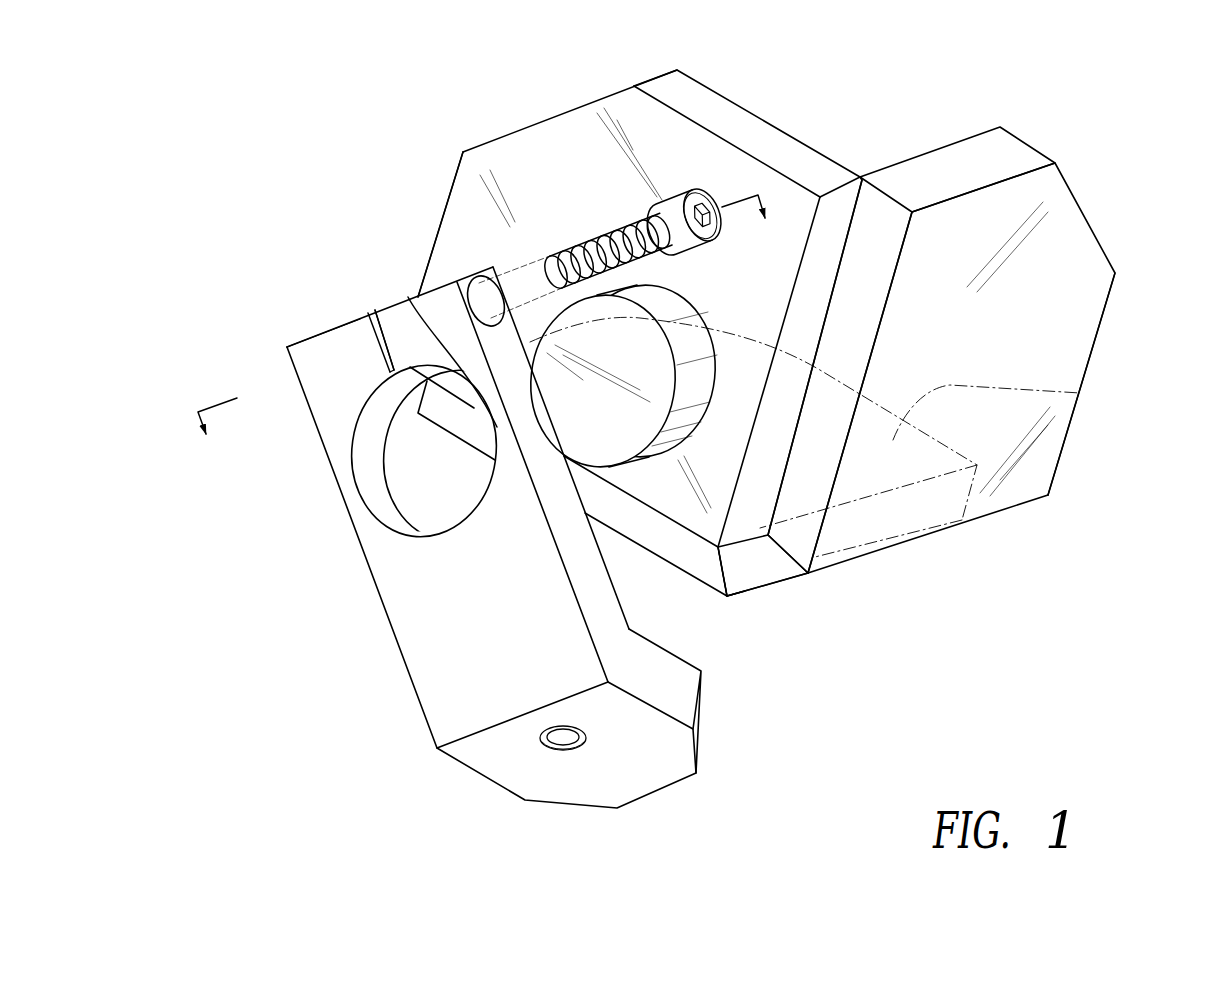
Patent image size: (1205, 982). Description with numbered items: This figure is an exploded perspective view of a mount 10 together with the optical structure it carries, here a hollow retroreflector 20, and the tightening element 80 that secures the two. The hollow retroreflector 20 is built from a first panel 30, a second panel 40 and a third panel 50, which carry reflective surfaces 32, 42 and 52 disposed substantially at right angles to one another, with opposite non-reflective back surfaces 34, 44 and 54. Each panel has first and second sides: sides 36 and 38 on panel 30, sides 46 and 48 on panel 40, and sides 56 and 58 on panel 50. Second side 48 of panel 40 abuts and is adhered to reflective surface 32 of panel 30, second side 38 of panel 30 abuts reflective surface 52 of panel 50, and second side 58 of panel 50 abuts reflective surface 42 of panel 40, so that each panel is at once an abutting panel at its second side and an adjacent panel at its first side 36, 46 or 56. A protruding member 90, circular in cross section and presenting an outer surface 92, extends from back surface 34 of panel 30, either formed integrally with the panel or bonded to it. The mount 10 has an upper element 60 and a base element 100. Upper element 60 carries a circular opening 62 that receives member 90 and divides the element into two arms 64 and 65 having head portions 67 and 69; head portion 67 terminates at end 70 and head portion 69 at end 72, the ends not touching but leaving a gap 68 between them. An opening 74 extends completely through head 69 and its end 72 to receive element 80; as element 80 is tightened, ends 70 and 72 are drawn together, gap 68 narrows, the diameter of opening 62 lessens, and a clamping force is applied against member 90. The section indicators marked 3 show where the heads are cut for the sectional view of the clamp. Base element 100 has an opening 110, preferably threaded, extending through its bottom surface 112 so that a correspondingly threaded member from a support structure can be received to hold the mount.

The mount 10 is at (692, 438).
The hollow retroreflector 20 is at (977, 318).
The first panel 30 is at (644, 367).
The reflective surface 32 is at (801, 136).
The back surface 34 is at (546, 175).
The first side 36 is at (741, 500).
The second side 38 is at (640, 520).
The second panel 40 is at (1068, 312).
The reflective surface 42 is at (939, 146).
The back surface 44 is at (956, 323).
The first side 46 is at (996, 522).
The second side 48 is at (798, 456).
The third panel 50 is at (780, 574).
The reflective surface 52 is at (1080, 393).
The back surface 54 is at (719, 606).
The first side 56 is at (701, 578).
The second side 58 is at (742, 578).
The upper element 60 is at (518, 486).
The opening 62 is at (412, 452).
The arm 64 is at (355, 490).
The arm 65 is at (440, 308).
The head portion 67 is at (330, 352).
The gap 68 is at (394, 378).
The head portion 69 is at (418, 288).
The end 70 is at (382, 328).
The end 72 is at (369, 328).
The opening 74 is at (484, 292).
The screw/bolt/tightening mechanism 80 is at (670, 208).
The protruding member 90 is at (643, 361).
The outer surface 92 is at (700, 375).
The base element 100 is at (668, 750).
The opening 110 is at (553, 746).
The bottom surface 112 is at (583, 781).
The section line 3- 3 is at (487, 330).